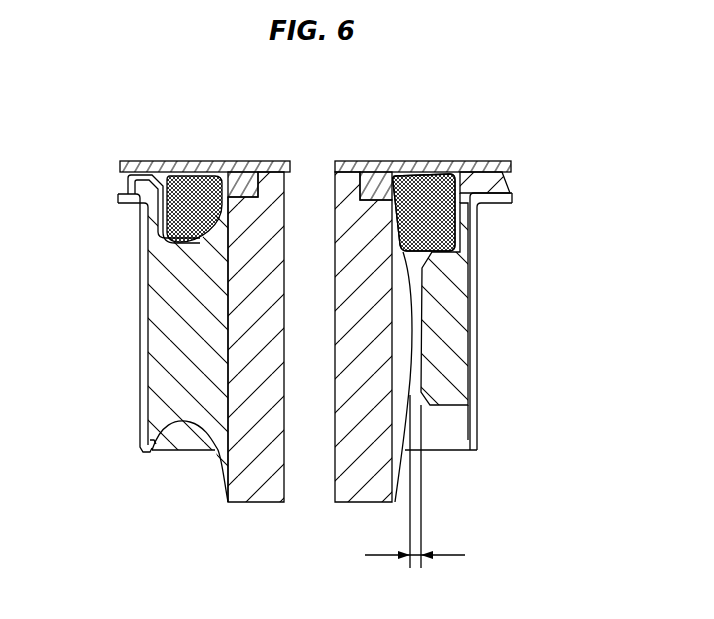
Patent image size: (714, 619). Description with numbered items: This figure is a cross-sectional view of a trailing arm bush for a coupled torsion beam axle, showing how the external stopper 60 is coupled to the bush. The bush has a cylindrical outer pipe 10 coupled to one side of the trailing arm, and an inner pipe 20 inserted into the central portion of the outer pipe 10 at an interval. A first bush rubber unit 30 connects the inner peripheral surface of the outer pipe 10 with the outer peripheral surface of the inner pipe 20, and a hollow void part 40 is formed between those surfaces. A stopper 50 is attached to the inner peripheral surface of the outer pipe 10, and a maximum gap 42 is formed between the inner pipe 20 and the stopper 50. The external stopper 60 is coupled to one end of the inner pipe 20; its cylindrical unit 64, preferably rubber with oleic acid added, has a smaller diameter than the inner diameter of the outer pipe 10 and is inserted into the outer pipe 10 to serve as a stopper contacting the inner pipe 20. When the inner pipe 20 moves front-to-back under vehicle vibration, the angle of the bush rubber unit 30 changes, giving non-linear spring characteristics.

The outer pipe 10 is at (470, 268).
The inner pipe 20 is at (365, 505).
The first bush rubber unit 30 is at (180, 343).
The hollow void part 40 is at (435, 427).
The maximum gap 42 is at (415, 573).
The stopper 50 is at (440, 345).
The external stopper 60 is at (386, 160).
The cylindrical unit 64 is at (432, 190).